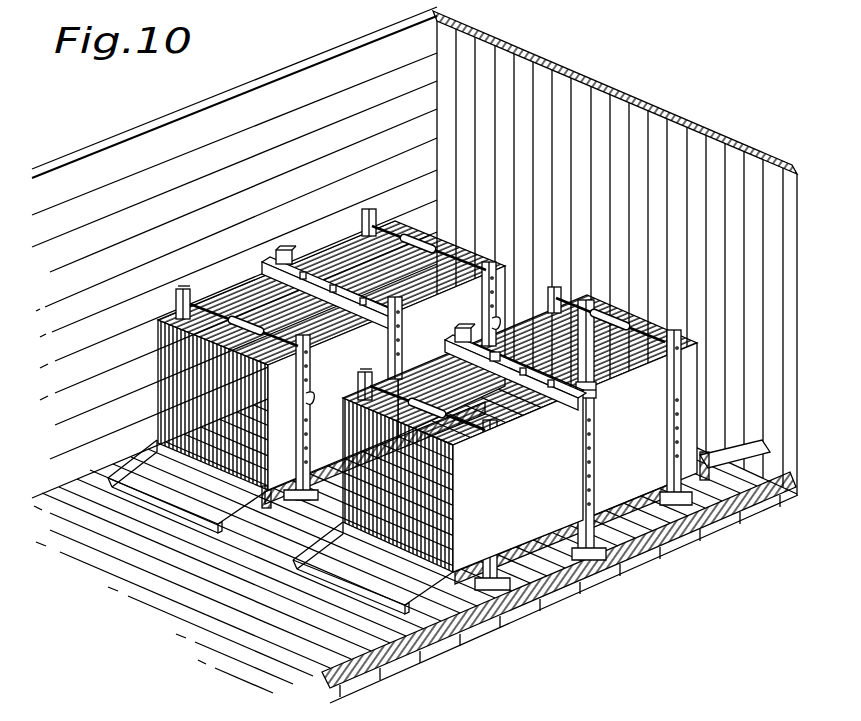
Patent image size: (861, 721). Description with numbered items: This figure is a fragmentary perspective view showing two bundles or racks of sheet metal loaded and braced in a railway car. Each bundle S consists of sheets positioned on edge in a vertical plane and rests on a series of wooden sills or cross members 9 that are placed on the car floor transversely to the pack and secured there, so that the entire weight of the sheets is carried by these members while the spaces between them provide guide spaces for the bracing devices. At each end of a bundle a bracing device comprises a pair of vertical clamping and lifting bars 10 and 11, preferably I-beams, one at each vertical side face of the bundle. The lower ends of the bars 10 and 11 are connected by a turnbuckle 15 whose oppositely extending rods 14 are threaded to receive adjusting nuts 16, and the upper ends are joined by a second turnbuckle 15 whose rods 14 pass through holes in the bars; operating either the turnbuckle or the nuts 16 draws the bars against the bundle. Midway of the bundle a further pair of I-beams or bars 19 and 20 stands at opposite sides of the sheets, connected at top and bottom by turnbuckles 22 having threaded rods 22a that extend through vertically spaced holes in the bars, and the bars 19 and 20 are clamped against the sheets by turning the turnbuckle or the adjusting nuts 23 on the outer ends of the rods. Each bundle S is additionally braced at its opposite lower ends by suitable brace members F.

The wooden sills or cross members 9 is at (475, 588).
The vertical clamping and lifting bar 10 is at (302, 434).
The vertical clamping and lifting bar 11 is at (186, 290).
The turnbuckle rods 14 is at (197, 301).
The turnbuckle 15 is at (238, 316).
The adjusting nut 16 is at (302, 358).
The I-beam or bar 19 is at (280, 255).
The I-beam or bar 20 is at (397, 362).
The turnbuckle 22 is at (540, 362).
The threaded rods 22a is at (495, 356).
The adjusting nuts 23 is at (596, 393).
The brace members F is at (210, 478).
The bundle S is at (350, 258).